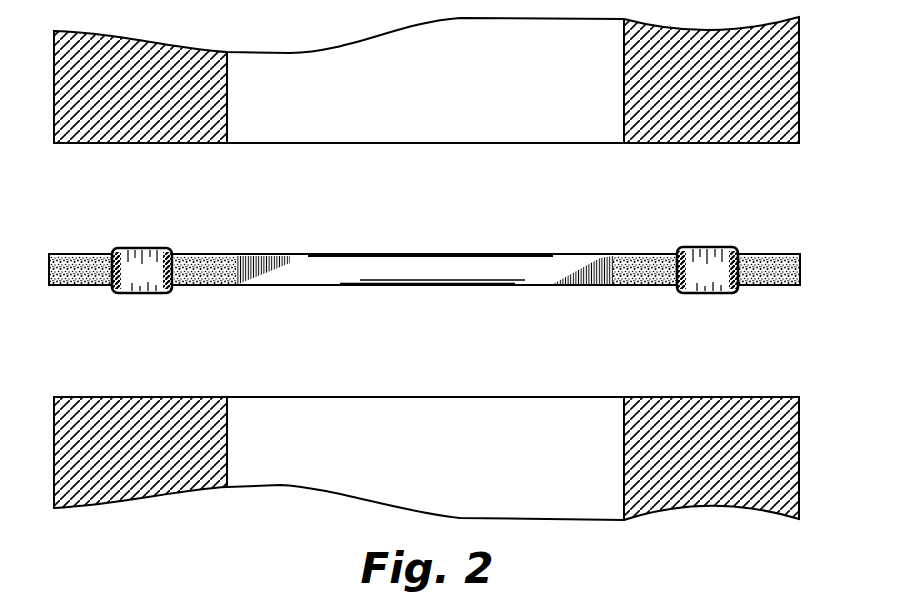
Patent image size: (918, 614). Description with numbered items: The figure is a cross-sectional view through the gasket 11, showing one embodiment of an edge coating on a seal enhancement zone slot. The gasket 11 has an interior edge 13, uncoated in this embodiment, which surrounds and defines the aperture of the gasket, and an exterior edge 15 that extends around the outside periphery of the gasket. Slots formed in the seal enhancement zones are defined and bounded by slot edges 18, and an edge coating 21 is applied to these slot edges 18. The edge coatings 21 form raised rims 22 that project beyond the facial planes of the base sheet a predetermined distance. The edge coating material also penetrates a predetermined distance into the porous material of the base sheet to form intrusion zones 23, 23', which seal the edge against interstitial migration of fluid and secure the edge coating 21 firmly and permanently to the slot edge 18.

The gasket 11 is at (797, 176).
The interior edge 13 is at (424, 305).
The exterior edge 15 is at (48, 272).
The slot edges 18 is at (177, 253).
The edge coating 21 is at (143, 258).
The raised rims 22 is at (113, 250).
The intrusion zones 23 is at (427, 269).
The fibrous filter layer 23' is at (202, 299).